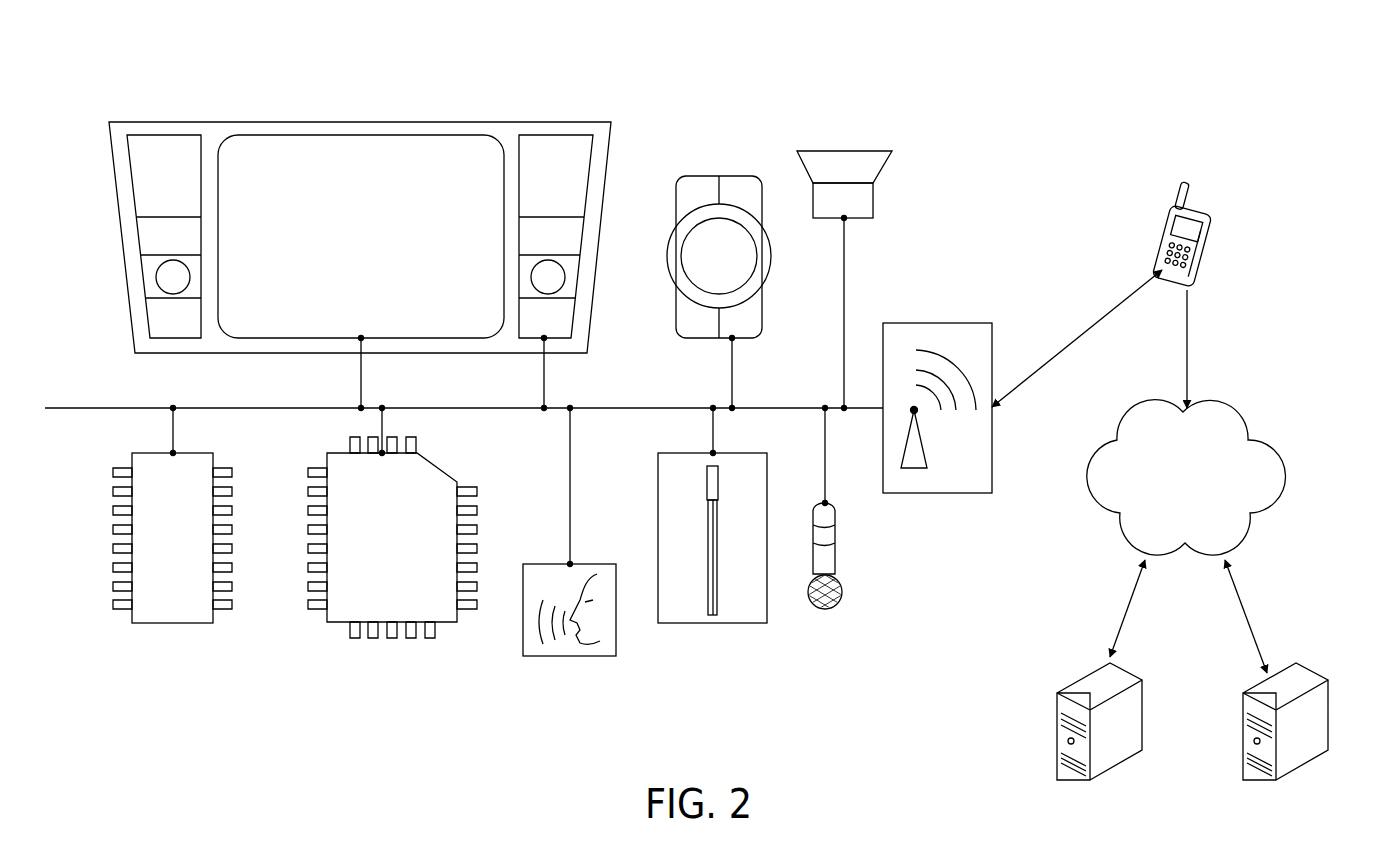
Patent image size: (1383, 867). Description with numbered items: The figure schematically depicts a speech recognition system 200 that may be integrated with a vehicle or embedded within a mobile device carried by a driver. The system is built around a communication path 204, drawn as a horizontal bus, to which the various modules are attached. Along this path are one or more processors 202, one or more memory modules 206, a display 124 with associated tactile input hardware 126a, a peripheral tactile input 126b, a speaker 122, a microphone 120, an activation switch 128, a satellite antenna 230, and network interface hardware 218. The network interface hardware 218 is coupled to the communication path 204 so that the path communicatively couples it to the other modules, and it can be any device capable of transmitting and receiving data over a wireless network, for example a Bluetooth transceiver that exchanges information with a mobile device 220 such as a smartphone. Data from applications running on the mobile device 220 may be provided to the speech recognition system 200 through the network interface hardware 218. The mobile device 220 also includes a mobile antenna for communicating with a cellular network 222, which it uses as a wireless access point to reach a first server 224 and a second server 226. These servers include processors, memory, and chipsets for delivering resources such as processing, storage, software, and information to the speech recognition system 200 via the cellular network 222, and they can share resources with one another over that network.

The speech recognition system 200 is at (1142, 140).
The display 124 is at (363, 147).
The tactile input hardware 126a is at (180, 277).
The peripheral tactile input 126b is at (705, 176).
The speaker 122 is at (865, 151).
The network interface hardware 218 is at (938, 323).
The mobile device 220 is at (1197, 207).
The cellular network 222 is at (1227, 402).
The first server 224 is at (1087, 675).
The second server 226 is at (1318, 675).
The communication path 204 is at (80, 412).
The memory modules 206 is at (173, 625).
The processors 202 is at (337, 625).
The activation switch 128 is at (547, 658).
The satellite antenna 230 is at (713, 624).
The microphone 120 is at (835, 538).